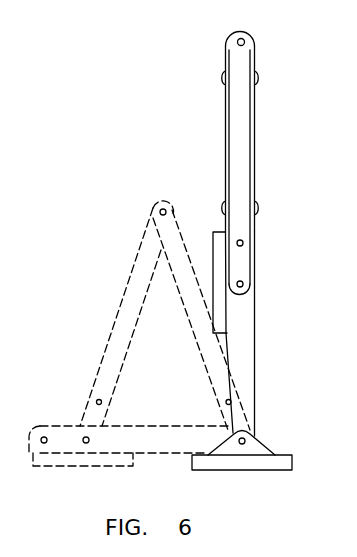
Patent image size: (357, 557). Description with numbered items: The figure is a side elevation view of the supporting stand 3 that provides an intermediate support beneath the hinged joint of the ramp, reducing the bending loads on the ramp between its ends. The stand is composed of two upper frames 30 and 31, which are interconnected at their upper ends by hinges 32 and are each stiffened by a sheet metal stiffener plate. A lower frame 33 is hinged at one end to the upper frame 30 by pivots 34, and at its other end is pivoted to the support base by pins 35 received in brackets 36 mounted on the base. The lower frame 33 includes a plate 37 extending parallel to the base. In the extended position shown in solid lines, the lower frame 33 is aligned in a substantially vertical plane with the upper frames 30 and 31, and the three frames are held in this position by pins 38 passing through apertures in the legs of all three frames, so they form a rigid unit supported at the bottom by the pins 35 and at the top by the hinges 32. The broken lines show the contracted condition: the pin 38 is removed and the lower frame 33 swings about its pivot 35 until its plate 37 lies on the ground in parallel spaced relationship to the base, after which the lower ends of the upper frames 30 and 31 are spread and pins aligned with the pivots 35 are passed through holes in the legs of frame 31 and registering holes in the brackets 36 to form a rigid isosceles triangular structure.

The supporting stand 3 is at (263, 470).
The upper frame 30 is at (226, 120).
The upper frame 31 is at (251, 119).
The hinges 32 is at (245, 41).
The lower frame 33 is at (248, 323).
The pivots 34 is at (243, 284).
The pins 35 is at (245, 441).
The brackets 36 is at (225, 450).
The plate 37 is at (213, 232).
The pins 38 is at (243, 243).